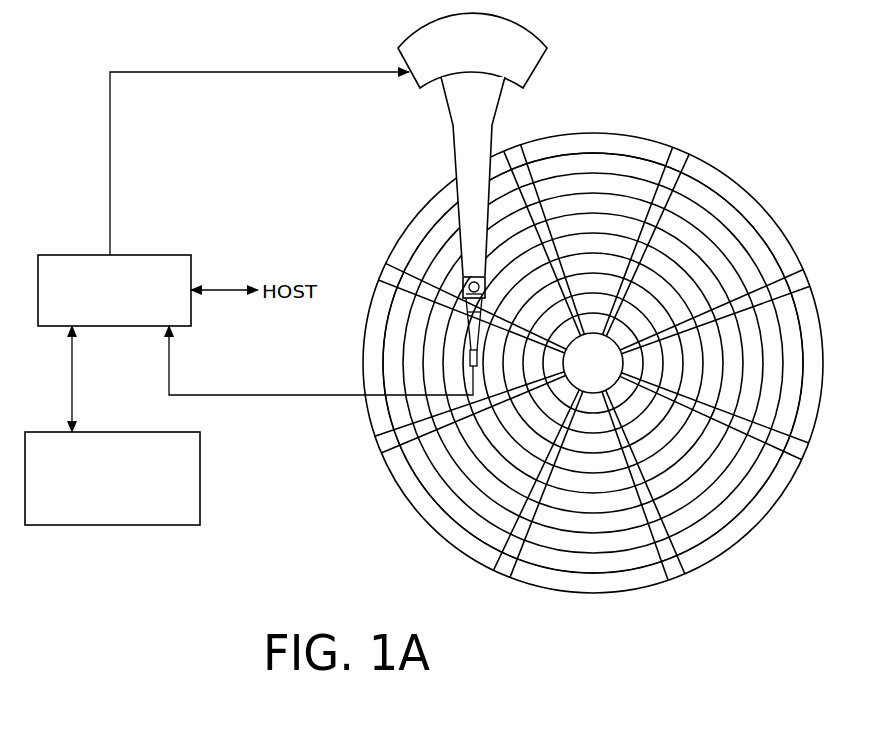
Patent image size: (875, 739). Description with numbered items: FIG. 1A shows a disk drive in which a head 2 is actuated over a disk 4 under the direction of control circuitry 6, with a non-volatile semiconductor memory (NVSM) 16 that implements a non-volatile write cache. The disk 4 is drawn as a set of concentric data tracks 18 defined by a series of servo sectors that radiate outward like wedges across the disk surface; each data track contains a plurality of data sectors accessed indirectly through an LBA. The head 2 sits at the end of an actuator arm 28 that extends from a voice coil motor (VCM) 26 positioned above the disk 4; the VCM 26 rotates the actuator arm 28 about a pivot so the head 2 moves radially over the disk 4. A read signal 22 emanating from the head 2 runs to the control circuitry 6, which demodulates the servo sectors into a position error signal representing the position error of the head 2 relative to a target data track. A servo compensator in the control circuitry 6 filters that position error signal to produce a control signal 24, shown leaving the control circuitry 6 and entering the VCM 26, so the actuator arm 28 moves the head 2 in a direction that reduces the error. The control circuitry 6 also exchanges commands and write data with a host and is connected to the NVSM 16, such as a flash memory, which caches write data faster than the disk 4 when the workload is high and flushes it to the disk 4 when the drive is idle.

The head 2 is at (466, 367).
The disk 4 is at (750, 185).
The control circuitry 6 is at (153, 255).
The non-volatile semiconductor memory (NVSM) 16 is at (200, 476).
The data tracks 18 is at (590, 160).
The read signal 22 is at (253, 395).
The control signal 24 is at (110, 148).
The voice coil motor (VCM) 26 is at (413, 80).
The actuator arm 28 is at (453, 163).